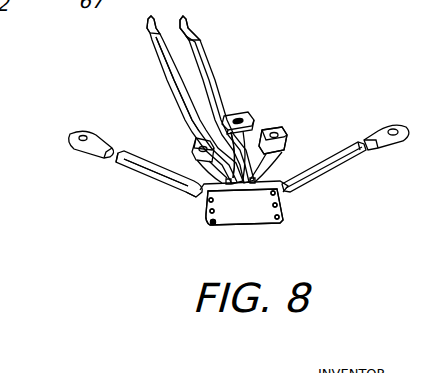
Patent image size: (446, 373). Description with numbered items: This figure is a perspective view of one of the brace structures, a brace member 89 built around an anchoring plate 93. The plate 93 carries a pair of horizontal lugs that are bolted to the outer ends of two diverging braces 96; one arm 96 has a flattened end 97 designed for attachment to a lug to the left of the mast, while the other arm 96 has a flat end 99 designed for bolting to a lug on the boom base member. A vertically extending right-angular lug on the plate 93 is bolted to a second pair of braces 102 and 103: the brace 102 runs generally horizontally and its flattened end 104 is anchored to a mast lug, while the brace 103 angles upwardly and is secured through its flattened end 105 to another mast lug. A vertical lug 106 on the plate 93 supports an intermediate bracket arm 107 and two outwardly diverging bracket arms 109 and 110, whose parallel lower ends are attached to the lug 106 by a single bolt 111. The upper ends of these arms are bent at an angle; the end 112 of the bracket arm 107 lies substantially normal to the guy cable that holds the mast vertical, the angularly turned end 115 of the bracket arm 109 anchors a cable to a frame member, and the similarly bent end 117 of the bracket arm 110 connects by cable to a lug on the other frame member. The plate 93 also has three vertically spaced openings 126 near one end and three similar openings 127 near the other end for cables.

The brace member 89 is at (150, 172).
The anchoring plate 93 is at (235, 221).
The diverging braces 96 is at (128, 161).
The flattened end 97 is at (80, 150).
The flat end 99 is at (400, 104).
The brace 102 is at (186, 21).
The brace 103 is at (146, 23).
The flattened end 104 is at (190, 28).
The flattened end 105 is at (153, 25).
The vertical lug 106 is at (242, 189).
The intermediate bracket arm 107 is at (250, 118).
The bracket arm 109 is at (192, 126).
The bracket arm 110 is at (286, 136).
The bolt 111 is at (190, 191).
The end of bracket arm 112 is at (229, 116).
The angularly turned end 115 is at (194, 146).
The angularly bent end 117 is at (275, 128).
The openings 126 is at (211, 223).
The openings 127 is at (280, 195).